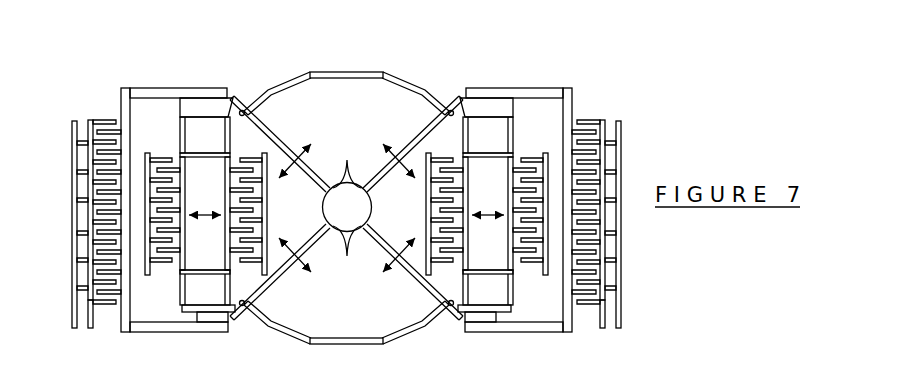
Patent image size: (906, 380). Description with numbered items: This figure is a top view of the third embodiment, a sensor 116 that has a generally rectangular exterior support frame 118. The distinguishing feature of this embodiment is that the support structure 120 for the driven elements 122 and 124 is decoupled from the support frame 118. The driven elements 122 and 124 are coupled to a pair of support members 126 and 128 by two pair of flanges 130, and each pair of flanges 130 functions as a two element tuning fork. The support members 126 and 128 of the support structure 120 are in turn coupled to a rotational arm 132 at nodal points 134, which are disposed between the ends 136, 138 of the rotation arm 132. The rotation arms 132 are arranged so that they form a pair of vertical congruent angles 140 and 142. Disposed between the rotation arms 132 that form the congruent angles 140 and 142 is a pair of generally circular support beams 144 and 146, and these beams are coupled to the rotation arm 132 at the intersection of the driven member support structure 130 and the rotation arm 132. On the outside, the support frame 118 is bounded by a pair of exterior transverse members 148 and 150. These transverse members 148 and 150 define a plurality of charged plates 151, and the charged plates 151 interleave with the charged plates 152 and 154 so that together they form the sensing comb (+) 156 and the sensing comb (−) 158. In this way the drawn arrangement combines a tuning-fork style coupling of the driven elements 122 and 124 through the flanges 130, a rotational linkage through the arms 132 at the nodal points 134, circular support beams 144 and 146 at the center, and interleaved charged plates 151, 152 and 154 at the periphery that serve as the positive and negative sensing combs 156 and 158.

The sensor 116 is at (355, 207).
The support frame 118 is at (178, 88).
The support structure 120 is at (231, 94).
The driven element 122 is at (180, 160).
The driven element 124 is at (512, 157).
The support member 126 is at (180, 115).
The support member 128 is at (197, 330).
The flanges 130 is at (225, 139).
The rotational arm 132 is at (267, 127).
The nodal point 134 is at (258, 108).
The end of rotation arm 136 is at (350, 211).
The end of rotation arm 138 is at (347, 208).
The congruent angle 140 is at (373, 173).
The congruent angle 142 is at (378, 244).
The support beam 144 is at (330, 72).
The support beam 146 is at (415, 336).
The exterior transverse member 148 is at (135, 188).
The exterior transverse member 150 is at (573, 97).
The charged plates 151 is at (100, 312).
The charged plates 152 is at (97, 122).
The charged plates 154 is at (82, 146).
The sensing comb (+) 156 is at (88, 332).
The sensing comb (−) 158 is at (75, 328).